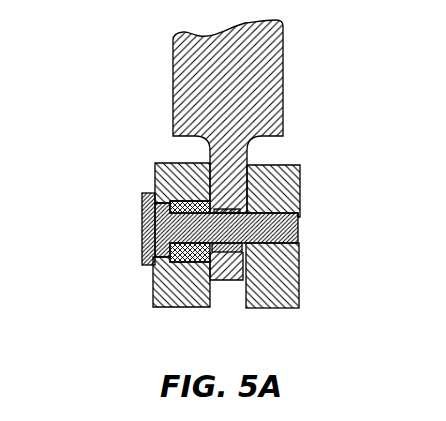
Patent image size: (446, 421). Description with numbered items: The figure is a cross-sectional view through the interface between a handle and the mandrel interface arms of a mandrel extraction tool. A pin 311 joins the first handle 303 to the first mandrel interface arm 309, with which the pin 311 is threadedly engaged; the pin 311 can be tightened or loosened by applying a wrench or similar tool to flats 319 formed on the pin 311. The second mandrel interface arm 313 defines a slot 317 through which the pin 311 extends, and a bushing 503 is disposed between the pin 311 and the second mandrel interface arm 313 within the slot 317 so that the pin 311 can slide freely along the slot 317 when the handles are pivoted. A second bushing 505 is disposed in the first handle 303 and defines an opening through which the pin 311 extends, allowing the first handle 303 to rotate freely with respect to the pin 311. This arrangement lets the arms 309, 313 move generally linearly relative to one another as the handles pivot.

The first handle 303 is at (262, 75).
The first mandrel interface arm 309 is at (287, 192).
The pin 311 is at (152, 232).
The second mandrel interface arm 313 is at (153, 163).
The slot 317 is at (180, 268).
The flats 319 is at (143, 193).
The bushing 503 is at (170, 206).
The bushing 505 is at (237, 247).